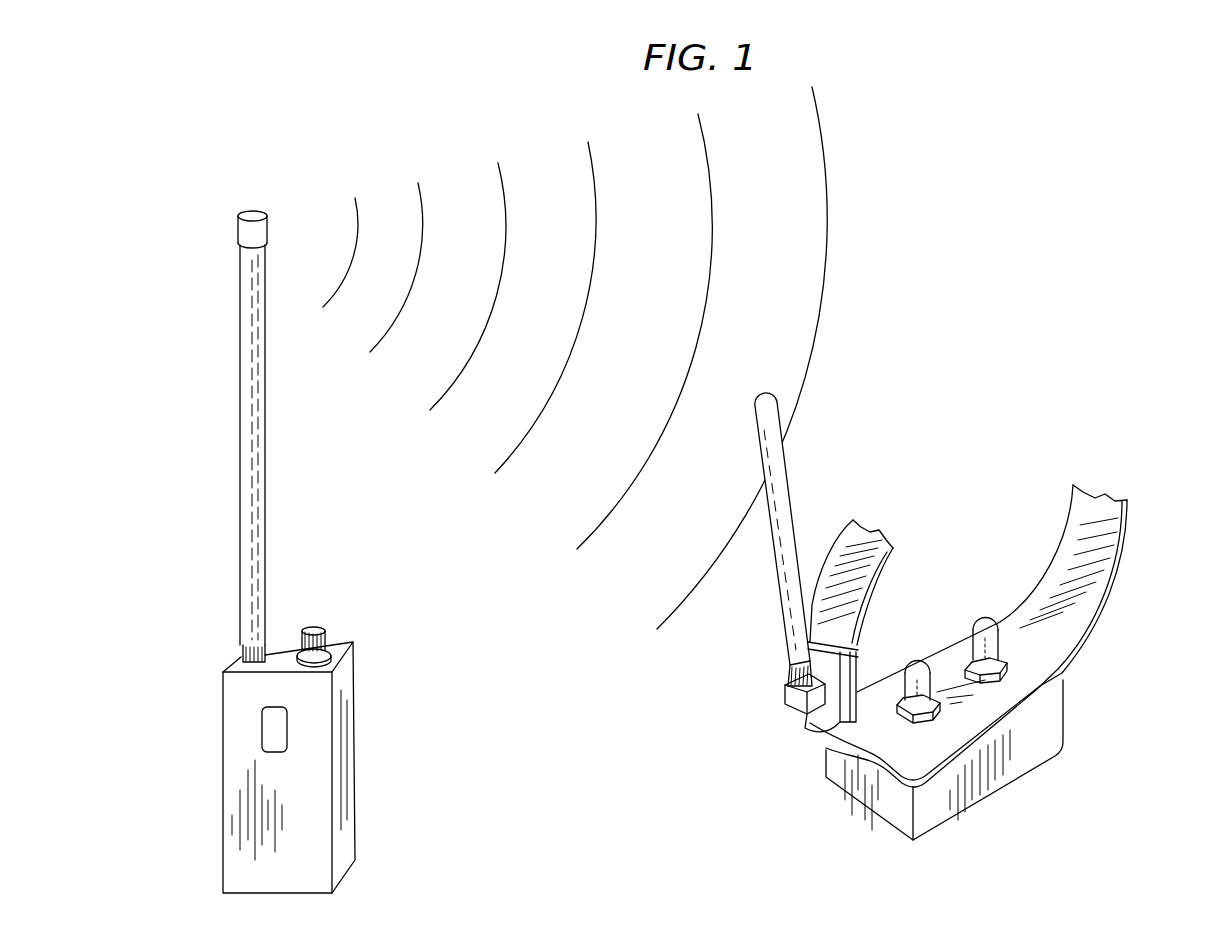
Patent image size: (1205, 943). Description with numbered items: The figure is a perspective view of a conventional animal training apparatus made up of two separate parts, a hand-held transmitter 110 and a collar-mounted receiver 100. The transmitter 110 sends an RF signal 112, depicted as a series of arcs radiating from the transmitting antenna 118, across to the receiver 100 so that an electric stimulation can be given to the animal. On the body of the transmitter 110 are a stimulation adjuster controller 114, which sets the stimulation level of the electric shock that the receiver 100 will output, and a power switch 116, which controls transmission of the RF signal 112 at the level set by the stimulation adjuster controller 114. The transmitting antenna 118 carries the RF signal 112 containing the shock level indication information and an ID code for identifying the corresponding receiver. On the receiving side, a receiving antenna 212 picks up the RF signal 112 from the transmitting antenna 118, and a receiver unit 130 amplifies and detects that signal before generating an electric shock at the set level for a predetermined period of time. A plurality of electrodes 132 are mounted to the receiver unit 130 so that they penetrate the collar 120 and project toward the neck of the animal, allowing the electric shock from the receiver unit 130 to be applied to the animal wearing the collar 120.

The receiver 100 is at (974, 616).
The transmitter 110 is at (265, 552).
The RF signal 112 is at (568, 532).
The stimulation adjuster controller 114 is at (318, 628).
The power switch 116 is at (262, 752).
The transmitting antenna 118 is at (248, 468).
The collar 120 is at (1133, 542).
The receiver unit 130 is at (1002, 790).
The electrodes 132 is at (984, 620).
The receiving antenna 212 is at (792, 492).